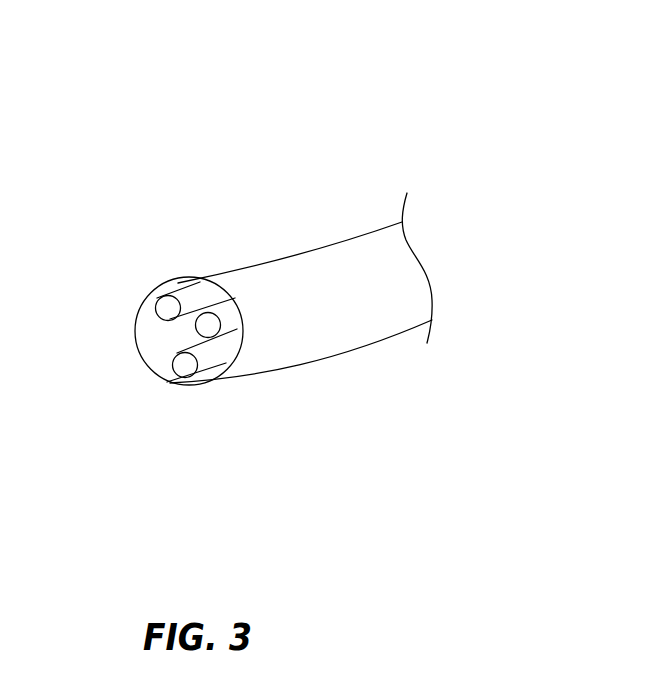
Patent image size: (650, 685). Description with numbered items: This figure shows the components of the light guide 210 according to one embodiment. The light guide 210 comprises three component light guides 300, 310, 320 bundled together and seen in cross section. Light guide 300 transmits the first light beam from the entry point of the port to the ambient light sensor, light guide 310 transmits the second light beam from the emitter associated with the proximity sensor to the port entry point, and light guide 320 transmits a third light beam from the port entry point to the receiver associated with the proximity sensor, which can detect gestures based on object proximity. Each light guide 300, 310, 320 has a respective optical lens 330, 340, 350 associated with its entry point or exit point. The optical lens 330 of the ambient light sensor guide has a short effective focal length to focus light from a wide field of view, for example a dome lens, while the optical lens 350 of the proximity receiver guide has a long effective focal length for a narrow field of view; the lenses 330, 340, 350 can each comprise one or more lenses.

The light guide 210 is at (414, 136).
The component light guide 300 is at (172, 292).
The component light guide 310 is at (236, 334).
The component light guide 320 is at (193, 352).
The optical lens 330 is at (168, 308).
The optical lens 340 is at (208, 326).
The optical lens 350 is at (186, 365).